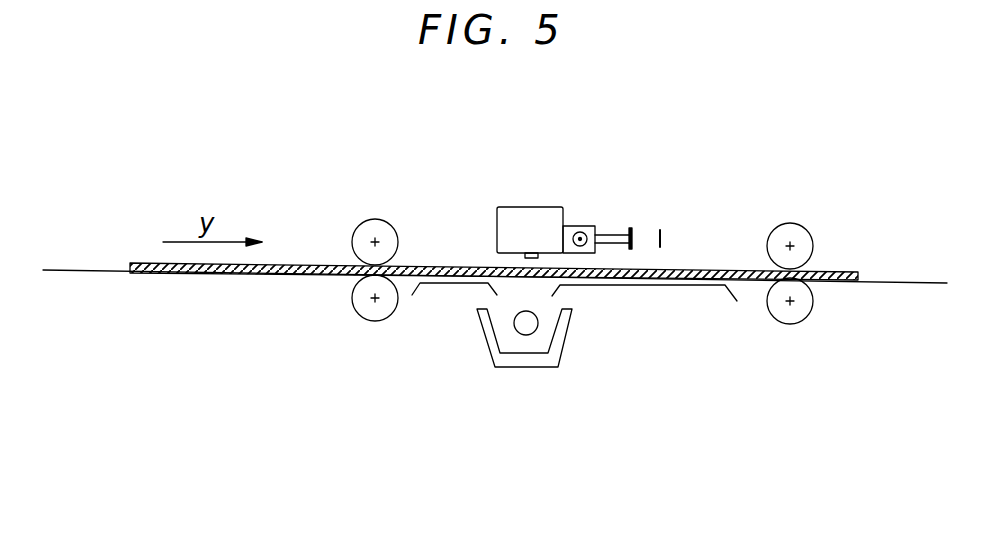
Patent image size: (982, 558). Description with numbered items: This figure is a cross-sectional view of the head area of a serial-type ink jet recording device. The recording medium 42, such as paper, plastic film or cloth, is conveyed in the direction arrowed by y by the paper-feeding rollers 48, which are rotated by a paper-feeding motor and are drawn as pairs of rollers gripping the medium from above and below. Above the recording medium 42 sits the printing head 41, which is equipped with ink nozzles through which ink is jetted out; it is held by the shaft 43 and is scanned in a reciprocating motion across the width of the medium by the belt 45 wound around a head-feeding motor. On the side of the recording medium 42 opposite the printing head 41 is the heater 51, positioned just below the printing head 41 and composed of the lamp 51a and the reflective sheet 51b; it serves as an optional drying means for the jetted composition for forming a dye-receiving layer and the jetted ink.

The printing head 41 is at (527, 218).
The recording medium 42 is at (145, 262).
The shaft 43 is at (582, 232).
The belt 45 is at (632, 236).
The paper-feeding rollers 48 is at (372, 218).
The heater 51 is at (542, 399).
The lamp 51a is at (506, 370).
The reflective sheet 51b is at (558, 345).